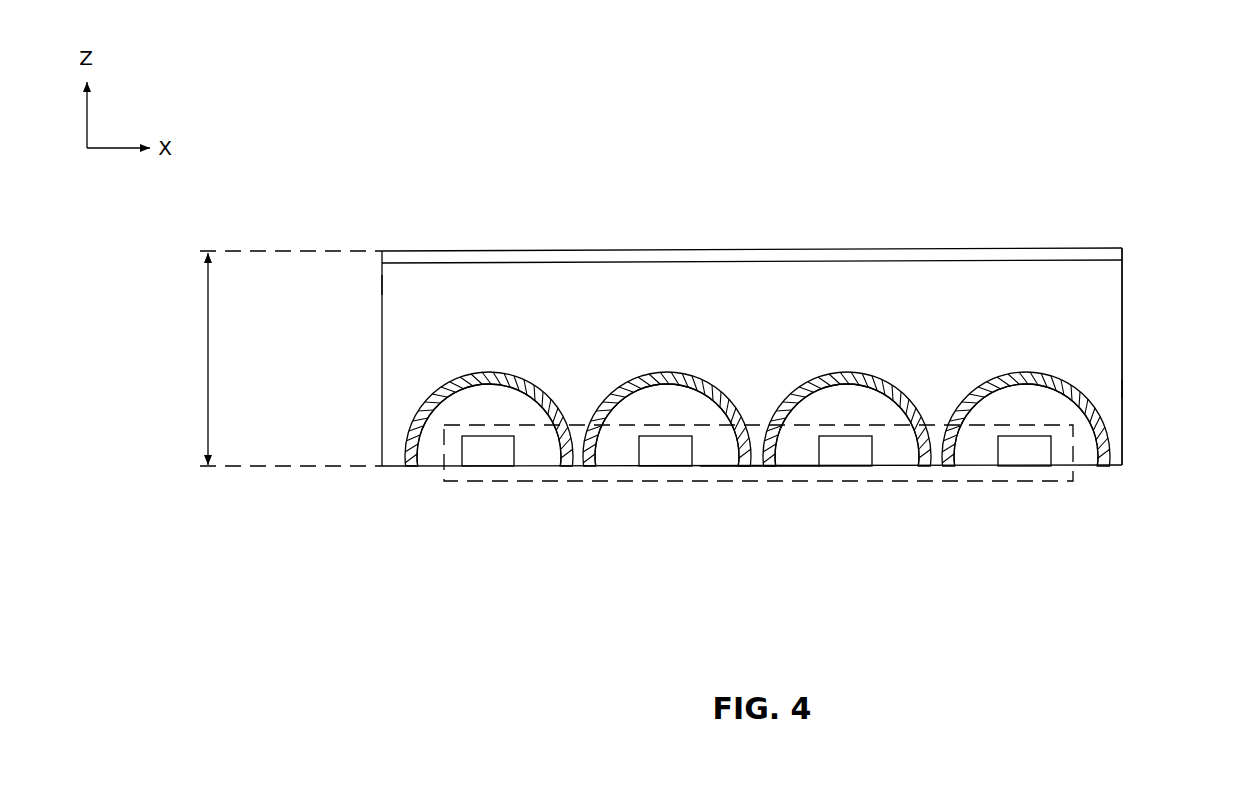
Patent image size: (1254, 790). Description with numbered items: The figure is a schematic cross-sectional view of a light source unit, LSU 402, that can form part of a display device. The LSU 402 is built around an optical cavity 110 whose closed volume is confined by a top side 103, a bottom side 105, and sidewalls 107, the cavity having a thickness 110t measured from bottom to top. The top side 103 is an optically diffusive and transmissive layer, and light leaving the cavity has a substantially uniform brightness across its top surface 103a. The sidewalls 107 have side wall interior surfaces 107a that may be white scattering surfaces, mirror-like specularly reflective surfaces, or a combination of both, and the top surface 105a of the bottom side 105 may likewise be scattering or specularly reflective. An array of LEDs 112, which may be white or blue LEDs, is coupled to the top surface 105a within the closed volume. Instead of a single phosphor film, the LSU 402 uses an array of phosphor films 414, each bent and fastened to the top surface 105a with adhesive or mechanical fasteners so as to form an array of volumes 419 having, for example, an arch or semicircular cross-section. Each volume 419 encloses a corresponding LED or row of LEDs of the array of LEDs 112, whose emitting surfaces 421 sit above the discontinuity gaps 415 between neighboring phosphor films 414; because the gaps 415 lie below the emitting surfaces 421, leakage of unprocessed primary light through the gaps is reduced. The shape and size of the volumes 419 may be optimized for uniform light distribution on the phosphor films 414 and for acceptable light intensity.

The LSU 402 is at (1057, 128).
The top side 103 is at (406, 258).
The top surface 103a is at (777, 249).
The optical cavity 110 is at (1126, 275).
The thickness 110t is at (212, 322).
The sidewalls 107 is at (381, 358).
The side wall interior surfaces 107a is at (384, 283).
The bottom side 105 is at (620, 468).
The top surface 105a is at (398, 466).
The discontinuity gaps 415 is at (758, 468).
The array of LEDs 112 is at (1008, 490).
The array of phosphor films 414 is at (492, 372).
The volumes 419 is at (505, 408).
The emitting surfaces 421 is at (488, 436).